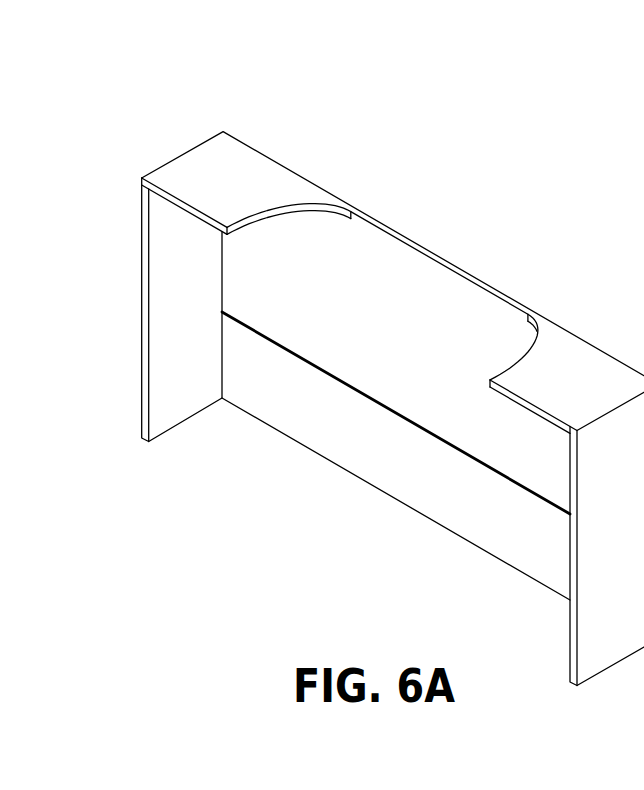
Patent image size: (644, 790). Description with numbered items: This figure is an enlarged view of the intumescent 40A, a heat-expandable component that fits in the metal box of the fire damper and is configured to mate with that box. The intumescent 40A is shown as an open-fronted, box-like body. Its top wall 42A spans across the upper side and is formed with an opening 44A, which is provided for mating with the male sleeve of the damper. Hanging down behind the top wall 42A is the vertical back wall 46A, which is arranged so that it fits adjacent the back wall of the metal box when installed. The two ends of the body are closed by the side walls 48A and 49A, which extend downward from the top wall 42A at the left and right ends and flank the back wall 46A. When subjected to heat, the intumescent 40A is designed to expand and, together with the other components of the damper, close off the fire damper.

The intumescent 40A is at (87, 157).
The top wall 42A is at (589, 392).
The opening 44A is at (382, 267).
The vertical back wall 46A is at (407, 368).
The side wall 48A is at (207, 316).
The side wall 49A is at (640, 512).